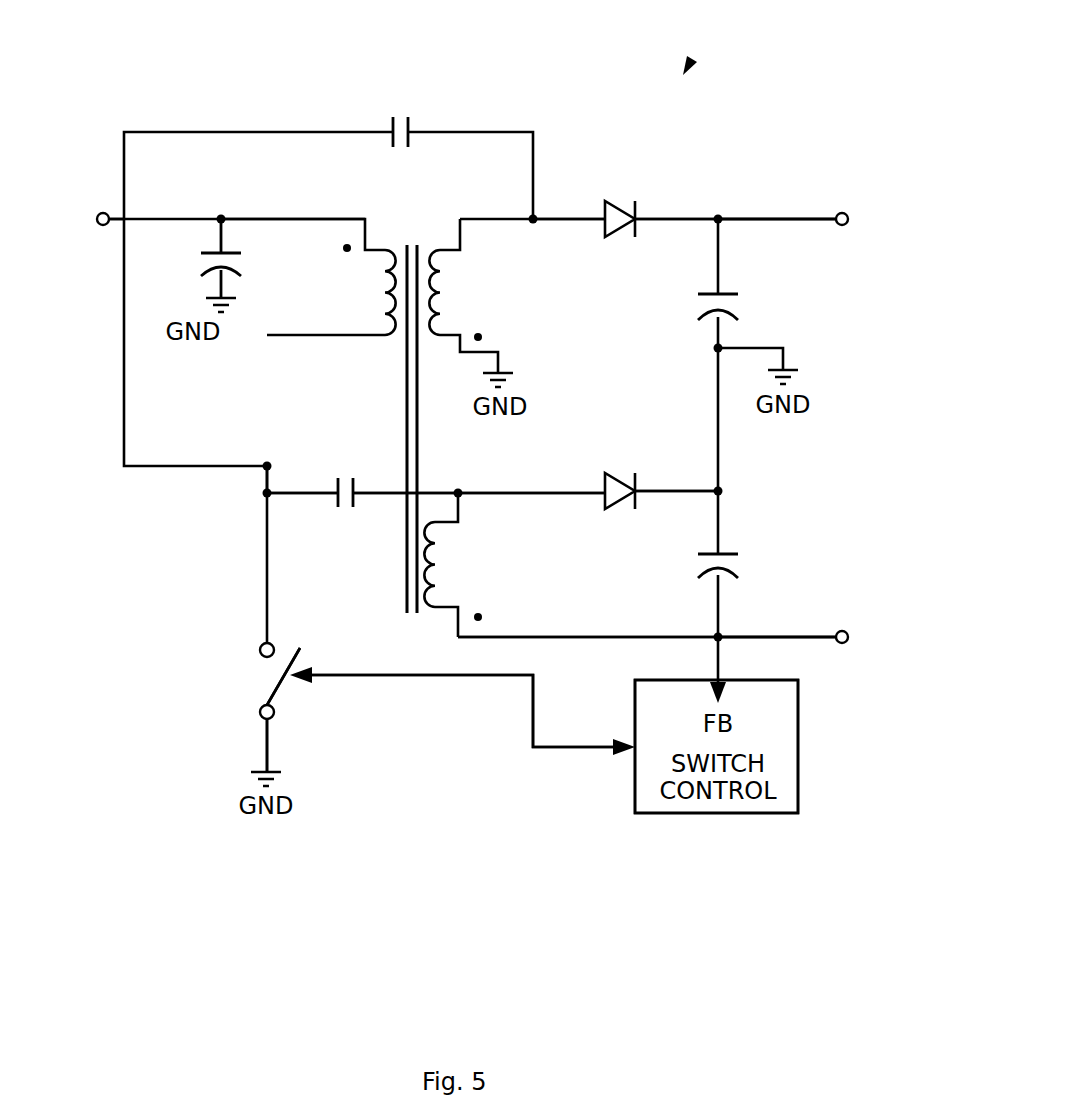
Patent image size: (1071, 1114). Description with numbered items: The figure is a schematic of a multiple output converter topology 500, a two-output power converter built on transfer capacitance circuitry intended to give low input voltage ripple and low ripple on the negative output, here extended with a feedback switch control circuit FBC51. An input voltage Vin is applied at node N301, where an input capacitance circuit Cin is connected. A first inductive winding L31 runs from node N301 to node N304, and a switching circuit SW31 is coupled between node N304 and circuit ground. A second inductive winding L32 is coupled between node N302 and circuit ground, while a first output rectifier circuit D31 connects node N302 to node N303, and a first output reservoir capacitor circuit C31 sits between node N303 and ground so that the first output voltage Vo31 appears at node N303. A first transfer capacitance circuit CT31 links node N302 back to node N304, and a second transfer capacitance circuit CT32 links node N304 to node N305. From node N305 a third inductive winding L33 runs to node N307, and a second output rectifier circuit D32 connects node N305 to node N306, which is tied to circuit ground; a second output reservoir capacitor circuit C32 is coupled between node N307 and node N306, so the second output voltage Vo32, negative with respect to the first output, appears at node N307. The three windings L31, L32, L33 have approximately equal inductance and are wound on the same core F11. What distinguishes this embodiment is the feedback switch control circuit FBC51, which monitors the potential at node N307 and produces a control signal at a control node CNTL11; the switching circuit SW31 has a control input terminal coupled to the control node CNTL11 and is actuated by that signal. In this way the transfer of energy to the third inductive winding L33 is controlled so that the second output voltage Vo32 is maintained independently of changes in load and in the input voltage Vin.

The multiple output converter topology 500 is at (690, 65).
The input voltage Vin is at (84, 220).
The first output voltage Vo31 is at (830, 220).
The second output voltage Vo32 is at (825, 638).
The first transfer capacitance circuit CT31 is at (400, 112).
The second transfer capacitance circuit CT32 is at (344, 474).
The input capacitance circuit Cin is at (205, 270).
The first output reservoir capacitor circuit C31 is at (697, 306).
The second output reservoir capacitor circuit C32 is at (742, 565).
The first inductive winding L31 is at (378, 305).
The second inductive winding L32 is at (445, 285).
The third inductive winding L33 is at (445, 558).
The core F11 is at (409, 616).
The first output rectifier circuit D31 is at (605, 205).
The second output rectifier circuit D32 is at (605, 472).
The node N301 is at (328, 216).
The node N302 is at (531, 215).
The node N303 is at (714, 214).
The node N304 is at (260, 481).
The node N305 is at (458, 490).
The node N306 is at (725, 490).
The node N307 is at (724, 630).
The switching circuit SW31 is at (262, 681).
The control node CNTL11 is at (386, 680).
The feedback switch control circuit FBC51 is at (800, 729).